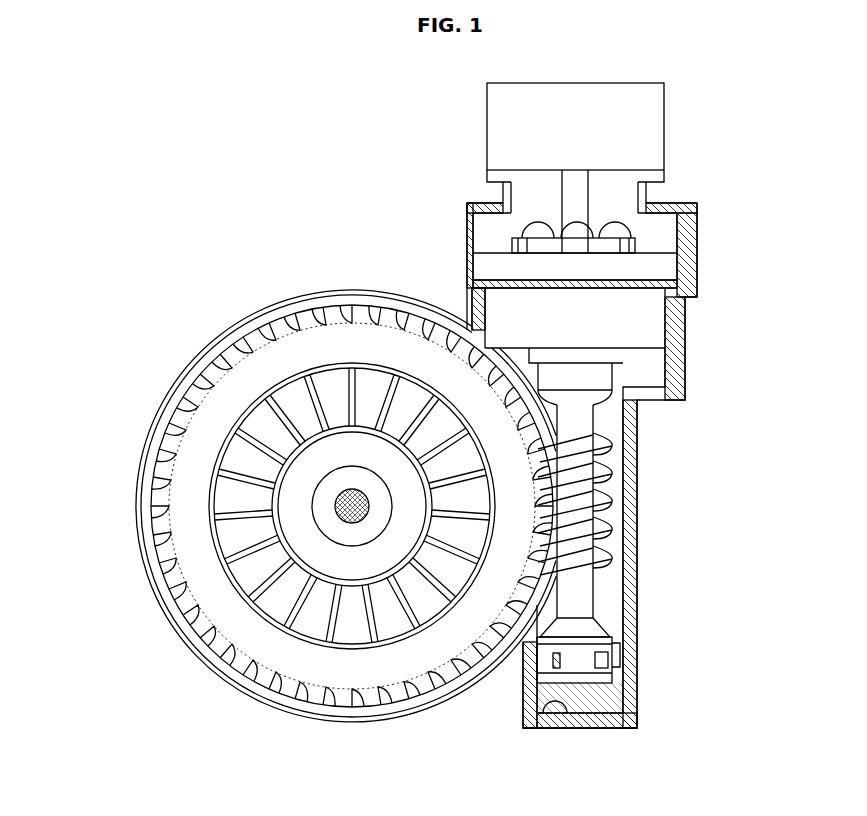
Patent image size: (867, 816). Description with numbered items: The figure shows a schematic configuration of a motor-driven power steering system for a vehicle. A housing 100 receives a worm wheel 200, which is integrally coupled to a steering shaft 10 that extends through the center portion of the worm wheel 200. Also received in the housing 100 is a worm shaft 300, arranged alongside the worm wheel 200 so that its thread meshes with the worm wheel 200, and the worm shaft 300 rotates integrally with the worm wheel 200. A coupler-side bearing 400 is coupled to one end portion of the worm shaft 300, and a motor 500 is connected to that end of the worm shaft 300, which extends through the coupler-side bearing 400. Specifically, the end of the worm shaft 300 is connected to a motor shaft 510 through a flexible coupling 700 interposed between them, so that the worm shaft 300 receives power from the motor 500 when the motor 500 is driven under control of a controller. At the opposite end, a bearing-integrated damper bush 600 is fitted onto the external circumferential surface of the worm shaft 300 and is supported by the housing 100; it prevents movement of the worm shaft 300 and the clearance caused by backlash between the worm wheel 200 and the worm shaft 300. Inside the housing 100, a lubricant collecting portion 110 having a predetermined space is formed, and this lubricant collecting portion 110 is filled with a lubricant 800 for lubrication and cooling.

The steering shaft 10 is at (345, 501).
The housing 100 is at (625, 590).
The lubricant collecting portion 110 is at (547, 713).
The worm wheel 200 is at (283, 363).
The worm shaft 300 is at (592, 524).
The coupler-side bearing 400 is at (640, 320).
The motor 500 is at (648, 130).
The motor shaft 510 is at (575, 192).
The bearing-integrated damper bush 600 is at (617, 660).
The flexible coupling 700 is at (630, 245).
The lubricant 800 is at (600, 700).